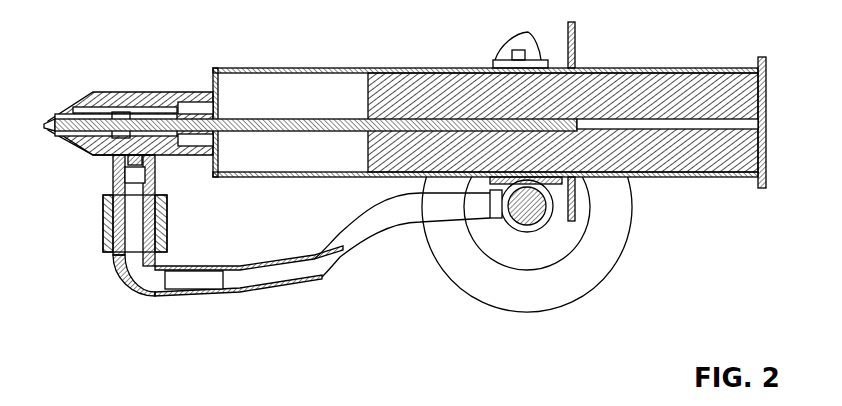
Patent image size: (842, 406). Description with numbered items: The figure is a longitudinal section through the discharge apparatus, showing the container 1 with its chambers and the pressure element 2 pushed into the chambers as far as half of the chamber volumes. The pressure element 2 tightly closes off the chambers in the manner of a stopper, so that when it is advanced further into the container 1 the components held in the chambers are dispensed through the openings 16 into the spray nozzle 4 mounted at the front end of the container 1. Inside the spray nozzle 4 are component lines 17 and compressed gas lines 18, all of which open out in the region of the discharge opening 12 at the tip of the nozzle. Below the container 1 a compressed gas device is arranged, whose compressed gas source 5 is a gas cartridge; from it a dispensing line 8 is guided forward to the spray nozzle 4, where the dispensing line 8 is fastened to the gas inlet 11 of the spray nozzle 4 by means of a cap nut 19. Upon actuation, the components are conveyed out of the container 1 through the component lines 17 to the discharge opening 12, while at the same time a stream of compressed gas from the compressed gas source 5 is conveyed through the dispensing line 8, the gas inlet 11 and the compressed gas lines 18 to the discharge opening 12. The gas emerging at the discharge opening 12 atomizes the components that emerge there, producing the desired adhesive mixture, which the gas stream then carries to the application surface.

The container 1 is at (291, 67).
The pressure element 2 is at (700, 82).
The spray nozzle 4 is at (163, 97).
The compressed gas source 5 is at (597, 258).
The dispensing line 8 is at (378, 230).
The gas inlet 11 is at (113, 160).
The discharge opening 12 is at (50, 118).
The openings 16 is at (196, 108).
The component lines 17 is at (137, 112).
The compressed gas lines 18 is at (98, 148).
The cap nut 19 is at (108, 231).